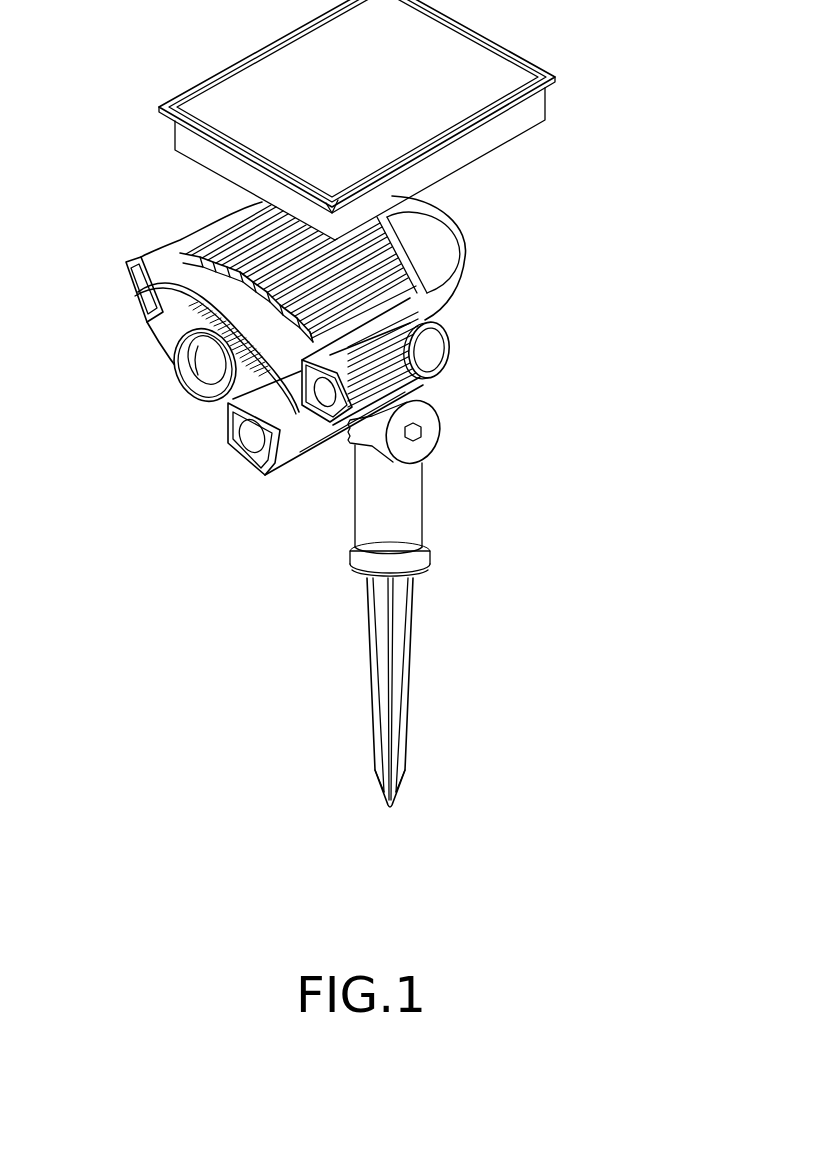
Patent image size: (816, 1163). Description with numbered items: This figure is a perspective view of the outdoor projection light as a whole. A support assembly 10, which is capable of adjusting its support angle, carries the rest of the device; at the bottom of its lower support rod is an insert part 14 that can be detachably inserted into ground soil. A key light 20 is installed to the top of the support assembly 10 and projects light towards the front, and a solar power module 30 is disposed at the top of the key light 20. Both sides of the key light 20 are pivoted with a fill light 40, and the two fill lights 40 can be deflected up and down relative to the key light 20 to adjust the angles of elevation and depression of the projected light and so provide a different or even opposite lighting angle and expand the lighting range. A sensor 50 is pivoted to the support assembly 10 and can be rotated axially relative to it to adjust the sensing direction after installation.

The support assembly 10 is at (433, 497).
The insert part 14 is at (408, 692).
The key light 20 is at (173, 375).
The solar power module 30 is at (540, 63).
The fill light 40 is at (120, 285).
The sensor 50 is at (225, 453).